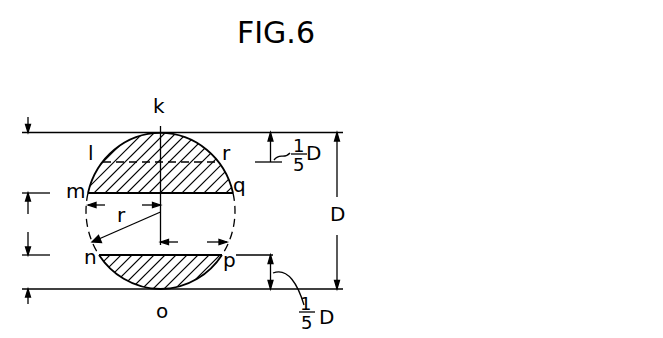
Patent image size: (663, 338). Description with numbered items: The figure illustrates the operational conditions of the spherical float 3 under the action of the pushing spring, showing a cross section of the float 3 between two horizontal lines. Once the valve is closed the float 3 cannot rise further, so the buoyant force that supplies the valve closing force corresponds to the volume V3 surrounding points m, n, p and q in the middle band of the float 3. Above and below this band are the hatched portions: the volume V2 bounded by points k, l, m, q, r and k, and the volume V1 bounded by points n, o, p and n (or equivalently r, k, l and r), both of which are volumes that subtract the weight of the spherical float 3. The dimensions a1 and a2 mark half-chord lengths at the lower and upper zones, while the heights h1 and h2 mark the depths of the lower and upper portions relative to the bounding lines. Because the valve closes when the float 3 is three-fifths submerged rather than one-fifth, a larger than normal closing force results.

The float 3 is at (157, 177).
The volume of the portion surrounding points r, k, l and r or points n, o, p and n V1 is at (153, 272).
The volume of the portion surrounding points k, l, m, q, r and k V2 is at (157, 163).
The volume of the portion surrounding points m, n, p, q and m V3 is at (160, 224).
The lower half-chord length a1 is at (194, 243).
The upper half-chord length a2 is at (124, 205).
The lower segment height h1 is at (36, 268).
The upper segment height h2 is at (36, 165).